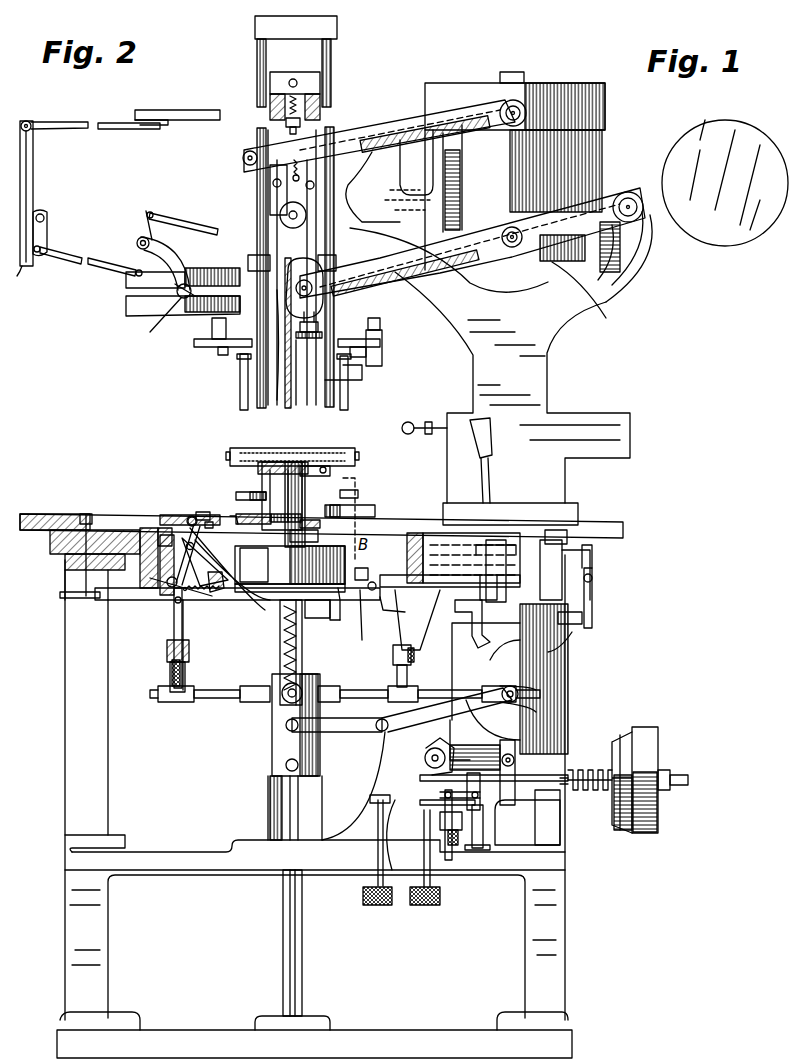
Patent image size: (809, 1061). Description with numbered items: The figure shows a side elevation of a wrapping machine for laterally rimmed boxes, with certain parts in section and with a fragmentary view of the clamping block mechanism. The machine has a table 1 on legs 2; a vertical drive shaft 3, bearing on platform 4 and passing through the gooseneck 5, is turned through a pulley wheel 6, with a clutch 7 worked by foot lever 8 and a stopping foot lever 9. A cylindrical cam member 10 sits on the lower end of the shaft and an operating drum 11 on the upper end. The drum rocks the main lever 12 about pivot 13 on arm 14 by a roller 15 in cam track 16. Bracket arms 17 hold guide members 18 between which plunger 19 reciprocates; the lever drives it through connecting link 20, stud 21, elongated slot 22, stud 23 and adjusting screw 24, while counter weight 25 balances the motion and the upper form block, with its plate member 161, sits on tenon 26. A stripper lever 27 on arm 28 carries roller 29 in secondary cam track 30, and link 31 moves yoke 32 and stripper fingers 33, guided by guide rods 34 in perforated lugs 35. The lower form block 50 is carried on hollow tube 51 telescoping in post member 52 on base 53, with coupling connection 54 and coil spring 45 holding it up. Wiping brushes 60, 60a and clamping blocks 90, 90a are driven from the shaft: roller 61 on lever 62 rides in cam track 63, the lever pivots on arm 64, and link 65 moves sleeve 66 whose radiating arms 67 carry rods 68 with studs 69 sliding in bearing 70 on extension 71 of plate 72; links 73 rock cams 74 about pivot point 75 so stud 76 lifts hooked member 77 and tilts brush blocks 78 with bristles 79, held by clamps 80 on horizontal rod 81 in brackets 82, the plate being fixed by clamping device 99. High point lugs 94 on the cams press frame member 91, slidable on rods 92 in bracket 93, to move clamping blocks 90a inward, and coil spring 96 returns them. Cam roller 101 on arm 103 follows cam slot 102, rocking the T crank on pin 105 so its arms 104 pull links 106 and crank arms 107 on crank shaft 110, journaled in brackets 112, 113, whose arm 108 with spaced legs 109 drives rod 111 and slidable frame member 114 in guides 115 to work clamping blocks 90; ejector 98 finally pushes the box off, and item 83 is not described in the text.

In FIG. 1, the table 1 is at (600, 530).
In FIG. 1, the legs 2 is at (106, 928).
In FIG. 1, the drive shaft 3 is at (512, 72).
In FIG. 1, the platform 4 is at (483, 870).
In FIG. 1, the standard or gooseneck 5 is at (548, 358).
In FIG. 1, the pulley wheel 6 is at (650, 736).
In FIG. 1, the clutch 7 is at (620, 812).
In FIG. 1, the foot lever 8 is at (375, 906).
In FIG. 1, the foot lever 9 is at (424, 906).
In FIG. 2, the cam member 10 is at (127, 312).
In FIG. 1, the cam member 10 is at (570, 666).
In FIG. 1, the operating drum 11 is at (606, 137).
In FIG. 1, the main lever 12 is at (654, 194).
In FIG. 1, the pivot 13 is at (646, 244).
In FIG. 1, the arm 14 is at (636, 264).
In FIG. 1, the roller 15 is at (590, 296).
In FIG. 1, the cam track 16 is at (622, 280).
In FIG. 1, the bracket arms 17 is at (378, 170).
In FIG. 1, the guide members 18 is at (275, 182).
In FIG. 1, the plunger 19 is at (300, 404).
In FIG. 1, the connecting link 20 is at (280, 222).
In FIG. 1, the stud 21 is at (290, 204).
In FIG. 1, the elongated slot 22 is at (312, 290).
In FIG. 1, the stud 23 is at (318, 300).
In FIG. 1, the adjusting screw 24 is at (318, 358).
In FIG. 1, the counter weight 25 is at (725, 183).
In FIG. 1, the tenon 26 is at (228, 578).
In FIG. 1, the lever 27 is at (350, 135).
In FIG. 1, the arm 28 is at (456, 170).
In FIG. 1, the roller 29 is at (525, 104).
In FIG. 1, the secondary cam track 30 is at (590, 115).
In FIG. 1, the connecting link 31 is at (244, 163).
In FIG. 1, the yoke 32 is at (232, 352).
In FIG. 1, the stripper fingers 33 is at (240, 392).
In FIG. 1, the guide rods 34 is at (257, 50).
In FIG. 1, the perforated lugs 35 is at (250, 255).
In FIG. 1, the coil spring 45 is at (282, 638).
In FIG. 1, the lower form block 50 is at (370, 575).
In FIG. 1, the hollow tube 51 is at (282, 618).
In FIG. 1, the post member 52 is at (266, 780).
In FIG. 1, the base 53 is at (230, 850).
In FIG. 1, the coupling connection 54 is at (268, 592).
In FIG. 1, the wiping brush 60 is at (229, 440).
In FIG. 1, the wiping brush 60a is at (214, 514).
In FIG. 1, the roller 61 is at (575, 710).
In FIG. 1, the lever 62 is at (436, 702).
In FIG. 1, the cam track 63 is at (570, 688).
In FIG. 1, the arm 64 is at (365, 860).
In FIG. 1, the link 65 is at (286, 745).
In FIG. 1, the sleeve 66 is at (272, 726).
In FIG. 1, the radiating arms 67 is at (248, 686).
In FIG. 1, the rod 68 is at (212, 700).
In FIG. 1, the stud 69 is at (172, 676).
In FIG. 1, the bearing 70 is at (166, 655).
In FIG. 1, the extension 71 is at (345, 482).
In FIG. 1, the plate 72 is at (34, 514).
In FIG. 1, the link 73 is at (176, 620).
In FIG. 1, the cam 74 is at (420, 516).
In FIG. 1, the pivot point 75 is at (195, 546).
In FIG. 1, the stud 76 is at (168, 600).
In FIG. 1, the hooked member 77 is at (200, 535).
In FIG. 1, the brush block 78 is at (204, 512).
In FIG. 1, the brush bristles 79 is at (292, 450).
In FIG. 1, the clamp 80 is at (215, 512).
In FIG. 1, the horizontal rod 81 is at (228, 520).
In FIG. 1, the brackets 82 is at (220, 536).
In FIG. 1, the plate 83 is at (225, 528).
In FIG. 2, the clamping blocks 90 is at (152, 108).
In FIG. 1, the clamping blocks 90 is at (377, 508).
In FIG. 1, the clamping blocks 90a is at (224, 592).
In FIG. 1, the frame member 91 is at (216, 592).
In FIG. 1, the rods 92 is at (152, 585).
In FIG. 1, the bracket 93 is at (118, 532).
In FIG. 1, the high point lug 94 is at (362, 610).
In FIG. 1, the coil spring 96 is at (186, 600).
In FIG. 1, the ejector 98 is at (410, 421).
In FIG. 1, the clamping device 99 is at (80, 580).
In FIG. 2, the cam roller 101 is at (164, 323).
In FIG. 1, the cam roller 101 is at (580, 630).
In FIG. 2, the cam slot 102 is at (126, 285).
In FIG. 1, the cam slot 102 is at (560, 640).
In FIG. 2, the arm 103 is at (165, 252).
In FIG. 1, the arm 103 is at (585, 616).
In FIG. 2, the arms 104 is at (136, 268).
In FIG. 2, the pin 105 is at (138, 242).
In FIG. 1, the pin 105 is at (594, 578).
In FIG. 2, the connecting links 106 is at (72, 256).
In FIG. 1, the connecting links 106 is at (595, 556).
In FIG. 2, the crank arm 107 is at (45, 230).
In FIG. 1, the crank arm 107 is at (594, 592).
In FIG. 2, the arm 108 is at (29, 176).
In FIG. 1, the arm 108 is at (310, 610).
In FIG. 2, the spaced legs 109 is at (36, 124).
In FIG. 1, the spaced legs 109 is at (290, 569).
In FIG. 2, the crank shaft 110 is at (20, 278).
In FIG. 1, the crank shaft 110 is at (332, 610).
In FIG. 2, the reciprocating rod 111 is at (106, 122).
In FIG. 1, the reciprocating rod 111 is at (345, 510).
In FIG. 1, the bracket 112 is at (552, 545).
In FIG. 1, the bracket 113 is at (418, 530).
In FIG. 2, the slidable frame member 114 is at (165, 123).
In FIG. 1, the slidable frame member 114 is at (350, 492).
In FIG. 1, the guides 115 is at (322, 524).
In FIG. 1, the plate member 161 is at (330, 545).